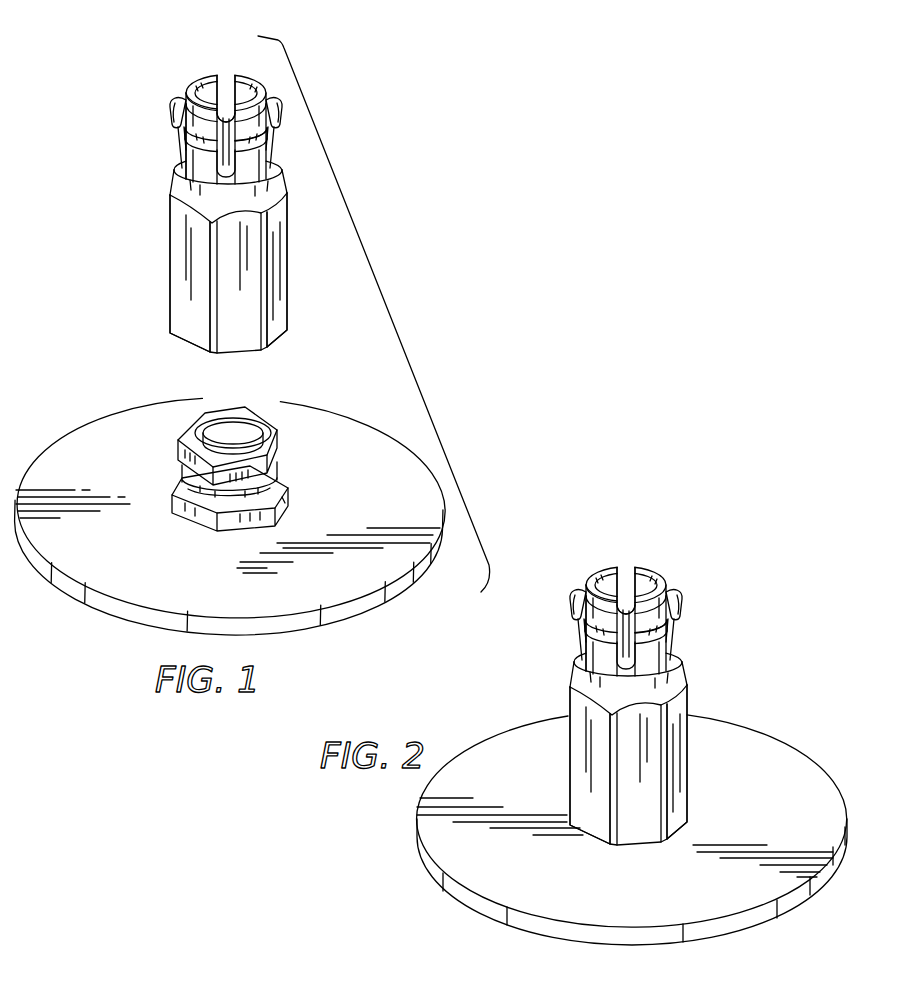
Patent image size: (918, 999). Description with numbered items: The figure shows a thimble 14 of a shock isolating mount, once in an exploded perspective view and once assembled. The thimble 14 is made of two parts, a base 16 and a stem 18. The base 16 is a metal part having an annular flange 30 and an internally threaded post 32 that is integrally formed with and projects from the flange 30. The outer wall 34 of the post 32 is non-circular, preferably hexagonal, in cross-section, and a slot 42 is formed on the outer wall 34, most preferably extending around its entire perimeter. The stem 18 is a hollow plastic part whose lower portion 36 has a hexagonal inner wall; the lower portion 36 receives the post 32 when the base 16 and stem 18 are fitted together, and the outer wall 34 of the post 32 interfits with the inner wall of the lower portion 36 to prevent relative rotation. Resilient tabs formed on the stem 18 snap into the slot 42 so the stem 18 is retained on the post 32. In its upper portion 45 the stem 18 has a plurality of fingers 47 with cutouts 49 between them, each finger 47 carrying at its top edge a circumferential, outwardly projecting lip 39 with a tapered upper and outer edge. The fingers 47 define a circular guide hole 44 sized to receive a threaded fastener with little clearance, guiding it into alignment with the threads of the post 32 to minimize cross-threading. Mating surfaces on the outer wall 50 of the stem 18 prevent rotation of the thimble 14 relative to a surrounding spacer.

In FIG. 1, the thimble 14 is at (229, 510).
In FIG. 2, the thimble 14 is at (632, 831).
In FIG. 1, the base 16 is at (375, 560).
In FIG. 2, the base 16 is at (797, 757).
In FIG. 1, the stem 18 is at (275, 248).
In FIG. 2, the stem 18 is at (688, 702).
In FIG. 1, the annular flange 30 is at (145, 612).
In FIG. 2, the annular flange 30 is at (623, 937).
In FIG. 1, the internally threaded post 32 is at (283, 477).
In FIG. 1, the outer wall 34 is at (178, 447).
In FIG. 1, the lower portion 36 is at (287, 273).
In FIG. 2, the lower portion 36 is at (690, 787).
In FIG. 1, the lip 39 is at (180, 165).
In FIG. 2, the lip 39 is at (570, 617).
In FIG. 1, the slot 42 is at (180, 488).
In FIG. 1, the guide hole 44 is at (210, 77).
In FIG. 2, the guide hole 44 is at (640, 603).
In FIG. 1, the upper portion 45 is at (270, 157).
In FIG. 2, the upper portion 45 is at (672, 650).
In FIG. 1, the fingers 47 is at (172, 135).
In FIG. 2, the fingers 47 is at (652, 573).
In FIG. 1, the cutouts 49 is at (226, 90).
In FIG. 2, the cutouts 49 is at (618, 583).
In FIG. 1, the outer wall 50 is at (182, 268).
In FIG. 2, the outer wall 50 is at (587, 770).